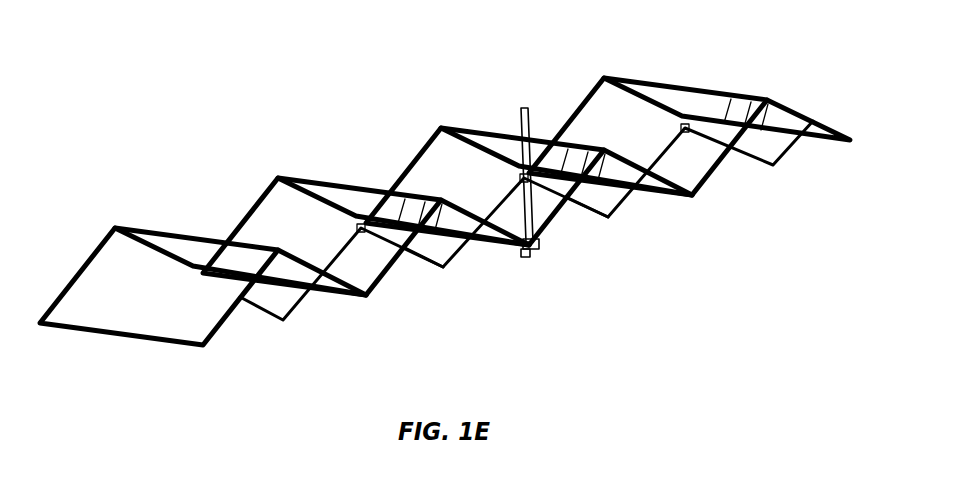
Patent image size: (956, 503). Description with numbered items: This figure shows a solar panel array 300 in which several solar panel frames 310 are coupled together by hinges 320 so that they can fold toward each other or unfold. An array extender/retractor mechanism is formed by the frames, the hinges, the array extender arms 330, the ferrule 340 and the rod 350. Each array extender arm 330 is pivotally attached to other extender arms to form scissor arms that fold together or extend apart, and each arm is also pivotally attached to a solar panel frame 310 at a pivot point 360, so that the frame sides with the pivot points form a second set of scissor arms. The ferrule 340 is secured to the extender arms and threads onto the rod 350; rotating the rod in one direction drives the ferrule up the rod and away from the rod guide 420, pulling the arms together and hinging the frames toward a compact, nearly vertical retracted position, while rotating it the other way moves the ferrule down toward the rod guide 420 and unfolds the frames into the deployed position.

The solar panel array 300 is at (124, 46).
The solar panel frame 310 is at (243, 230).
The hinge 320 is at (287, 176).
The array extender arm 330 is at (300, 313).
The ferrule 340 is at (517, 175).
The rod 350 is at (520, 117).
The pivot point 360 is at (713, 118).
The rod guide 420 is at (536, 252).